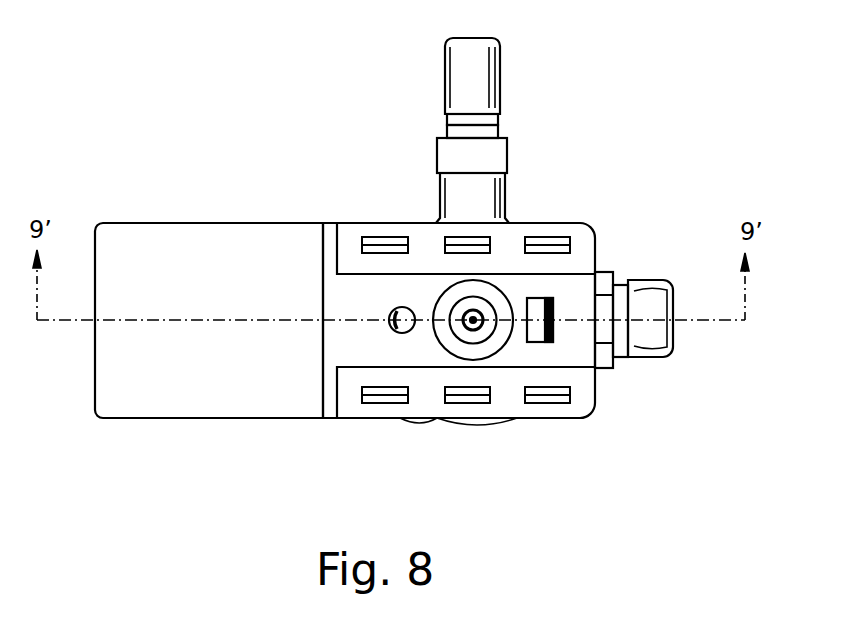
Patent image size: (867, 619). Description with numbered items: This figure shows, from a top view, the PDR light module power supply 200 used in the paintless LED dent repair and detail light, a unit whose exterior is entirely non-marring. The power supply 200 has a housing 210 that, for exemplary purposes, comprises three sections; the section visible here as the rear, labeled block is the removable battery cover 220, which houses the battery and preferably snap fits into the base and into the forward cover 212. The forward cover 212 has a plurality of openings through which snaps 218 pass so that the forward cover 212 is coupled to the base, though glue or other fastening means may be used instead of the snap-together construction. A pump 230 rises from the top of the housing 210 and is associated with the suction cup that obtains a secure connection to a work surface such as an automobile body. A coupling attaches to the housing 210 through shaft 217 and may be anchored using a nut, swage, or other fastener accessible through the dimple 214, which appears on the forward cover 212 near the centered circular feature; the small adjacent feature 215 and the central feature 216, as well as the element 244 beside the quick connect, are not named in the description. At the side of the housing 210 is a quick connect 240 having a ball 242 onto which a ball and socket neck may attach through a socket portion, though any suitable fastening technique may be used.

The PDR light module power supply 200 is at (647, 60).
The power supply housing 210 is at (472, 296).
The forward cover 212 is at (296, 289).
The dimple 214 is at (417, 274).
The sensor window 215 is at (402, 320).
The light source 216 is at (391, 385).
The shaft 217 is at (581, 271).
The snaps 218 is at (492, 349).
The battery cover 220 is at (209, 289).
The pump 230 is at (402, 130).
The quick connect 240 is at (698, 346).
The ball 242 is at (693, 333).
The flange collar 244 is at (646, 298).